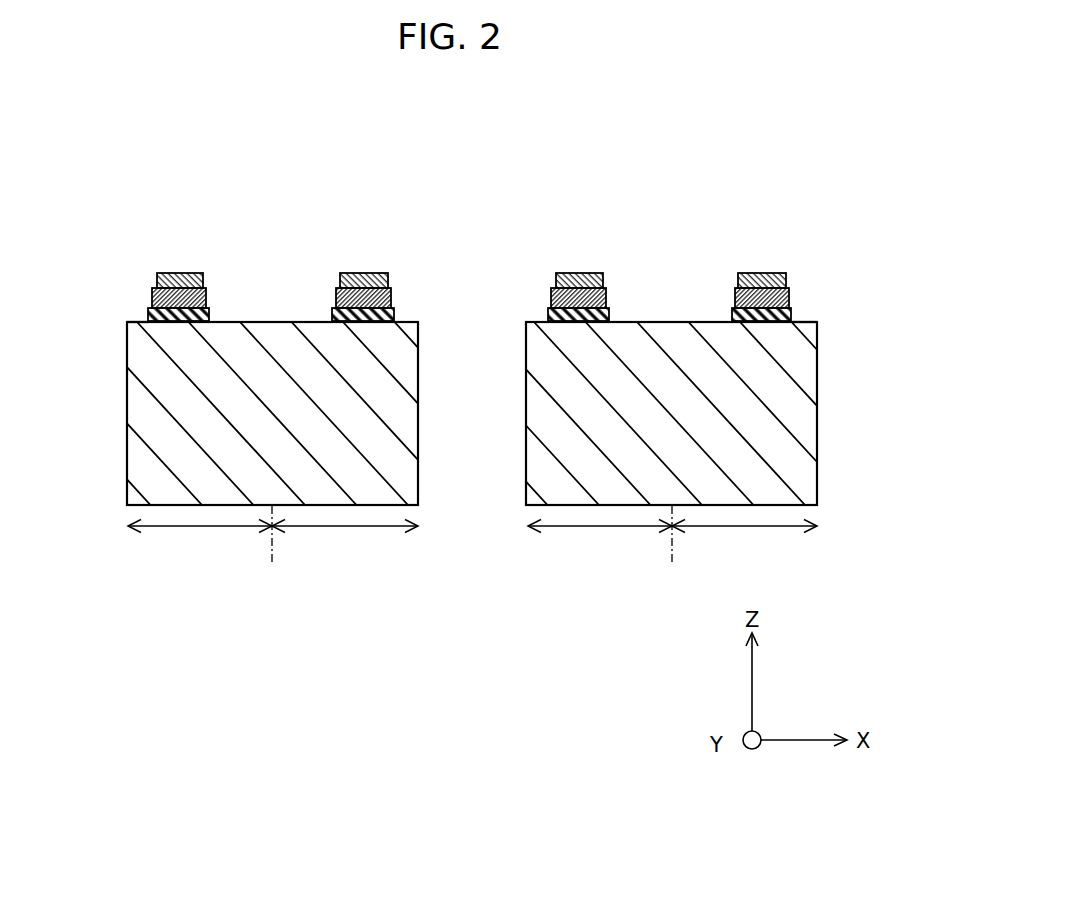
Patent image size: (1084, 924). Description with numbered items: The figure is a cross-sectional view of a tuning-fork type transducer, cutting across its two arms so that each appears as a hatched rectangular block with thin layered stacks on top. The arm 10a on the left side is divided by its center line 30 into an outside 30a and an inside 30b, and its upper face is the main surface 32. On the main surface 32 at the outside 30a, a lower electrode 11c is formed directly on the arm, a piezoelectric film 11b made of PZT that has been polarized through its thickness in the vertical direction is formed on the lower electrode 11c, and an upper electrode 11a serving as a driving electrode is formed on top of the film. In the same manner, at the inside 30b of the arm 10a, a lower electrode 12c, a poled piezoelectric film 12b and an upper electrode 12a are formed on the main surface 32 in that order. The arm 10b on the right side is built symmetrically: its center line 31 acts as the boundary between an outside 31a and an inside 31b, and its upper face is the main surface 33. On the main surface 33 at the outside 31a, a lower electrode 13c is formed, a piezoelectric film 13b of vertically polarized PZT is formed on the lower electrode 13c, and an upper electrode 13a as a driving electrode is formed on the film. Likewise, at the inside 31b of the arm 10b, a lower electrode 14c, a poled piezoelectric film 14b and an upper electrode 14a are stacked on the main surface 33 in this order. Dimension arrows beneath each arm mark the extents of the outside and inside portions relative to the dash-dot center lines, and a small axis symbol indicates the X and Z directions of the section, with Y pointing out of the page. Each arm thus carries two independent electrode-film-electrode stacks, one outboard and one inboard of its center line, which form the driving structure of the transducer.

The arm 10a is at (142, 457).
The arm 10b is at (805, 415).
The upper electrode 11a is at (181, 272).
The piezoelectric film 11b is at (152, 290).
The lower electrode 11c is at (150, 310).
The upper electrode 12a is at (365, 272).
The piezoelectric film 12b is at (390, 291).
The lower electrode 12c is at (390, 317).
The upper electrode 13a is at (765, 272).
The piezoelectric film 13b is at (788, 305).
The lower electrode 13c is at (791, 315).
The upper electrode 14a is at (580, 272).
The piezoelectric film 14b is at (552, 293).
The lower electrode 14c is at (552, 317).
The center line 30 is at (273, 548).
The outside 30a is at (184, 539).
The inside 30b is at (356, 539).
The center line 31 is at (673, 548).
The outside 31a is at (755, 539).
The inside 31b is at (592, 539).
The main surface 32 is at (138, 323).
The main surface 33 is at (812, 320).